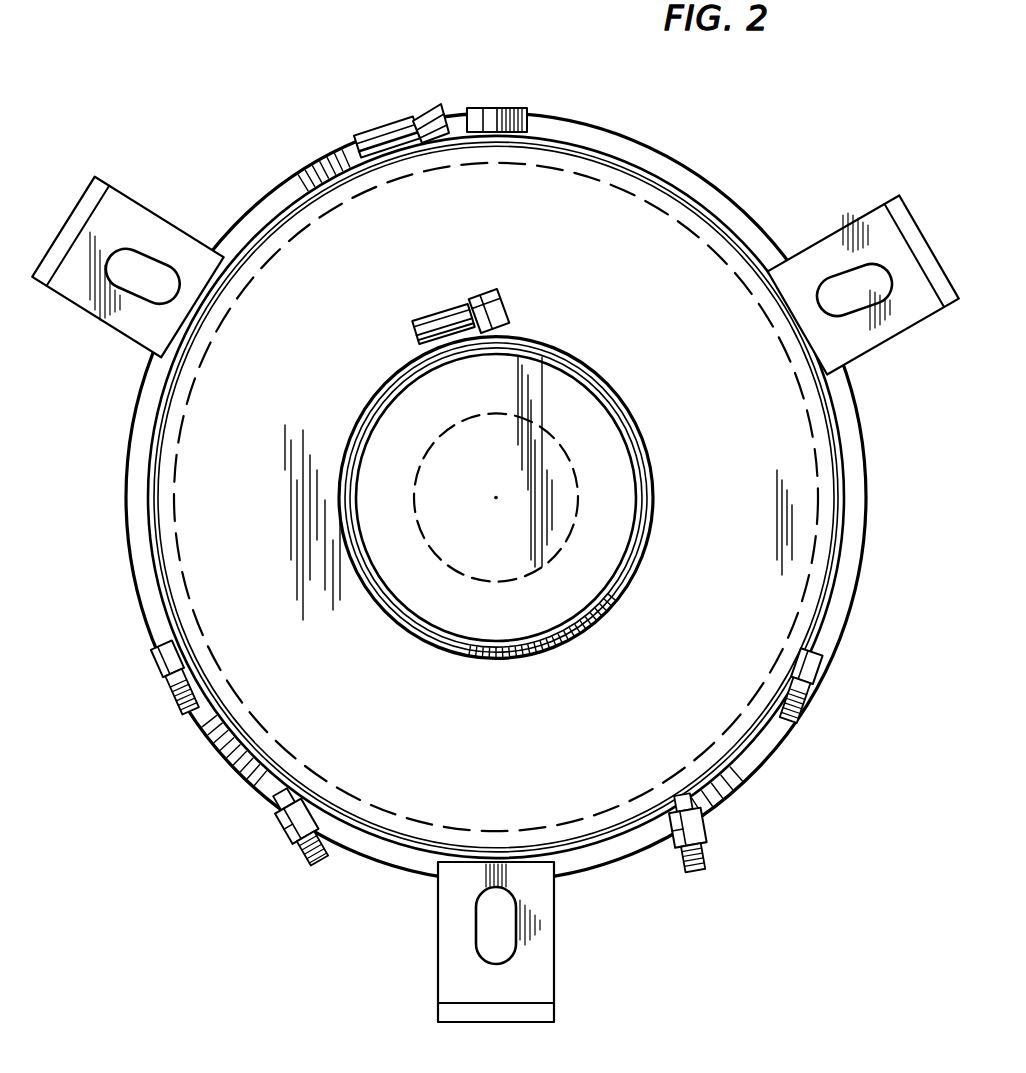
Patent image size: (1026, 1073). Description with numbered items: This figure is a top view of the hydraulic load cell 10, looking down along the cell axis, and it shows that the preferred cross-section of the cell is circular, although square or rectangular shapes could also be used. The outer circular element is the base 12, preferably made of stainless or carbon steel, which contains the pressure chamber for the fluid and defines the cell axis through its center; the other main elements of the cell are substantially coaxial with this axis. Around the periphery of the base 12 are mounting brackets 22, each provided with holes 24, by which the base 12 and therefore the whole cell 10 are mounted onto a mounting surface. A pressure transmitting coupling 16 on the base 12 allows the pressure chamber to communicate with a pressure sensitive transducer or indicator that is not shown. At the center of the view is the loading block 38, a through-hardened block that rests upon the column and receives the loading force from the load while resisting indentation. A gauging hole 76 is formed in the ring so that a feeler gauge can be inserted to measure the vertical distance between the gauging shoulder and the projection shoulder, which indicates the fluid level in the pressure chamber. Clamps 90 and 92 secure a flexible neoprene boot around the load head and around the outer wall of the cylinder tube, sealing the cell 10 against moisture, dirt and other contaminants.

The hydraulic load cell 10 is at (730, 183).
The base 12 is at (251, 206).
The pressure transmitting coupling 16 is at (700, 862).
The mounting brackets 22 is at (99, 178).
The holes 24 is at (140, 297).
The loading block 38 is at (463, 610).
The gauging hole 76 is at (500, 108).
The clamp 90 is at (432, 319).
The clamp 92 is at (384, 128).